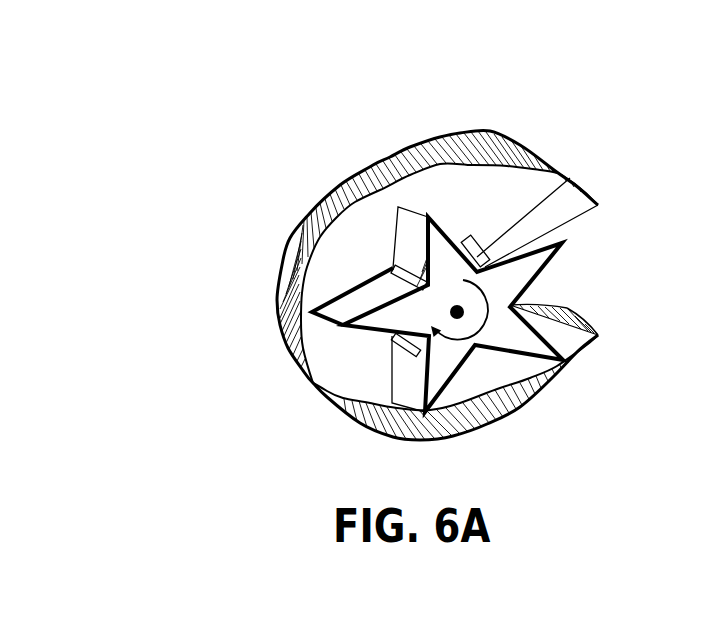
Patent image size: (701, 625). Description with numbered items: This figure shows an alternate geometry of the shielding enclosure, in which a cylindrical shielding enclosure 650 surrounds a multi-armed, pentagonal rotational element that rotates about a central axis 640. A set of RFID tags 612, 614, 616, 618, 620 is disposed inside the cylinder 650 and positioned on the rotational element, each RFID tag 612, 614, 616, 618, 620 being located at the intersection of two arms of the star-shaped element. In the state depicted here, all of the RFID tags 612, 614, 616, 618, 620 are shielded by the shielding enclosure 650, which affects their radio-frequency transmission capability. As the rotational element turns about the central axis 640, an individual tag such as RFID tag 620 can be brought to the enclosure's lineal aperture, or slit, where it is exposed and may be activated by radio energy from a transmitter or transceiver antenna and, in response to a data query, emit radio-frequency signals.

The RFID tag 612 is at (475, 257).
The RFID tag 614 is at (567, 308).
The RFID tag 616 is at (476, 347).
The RFID tag 618 is at (393, 340).
The RFID tag 620 is at (392, 270).
The central axis 640 is at (457, 312).
The shielding enclosure 650 is at (308, 215).